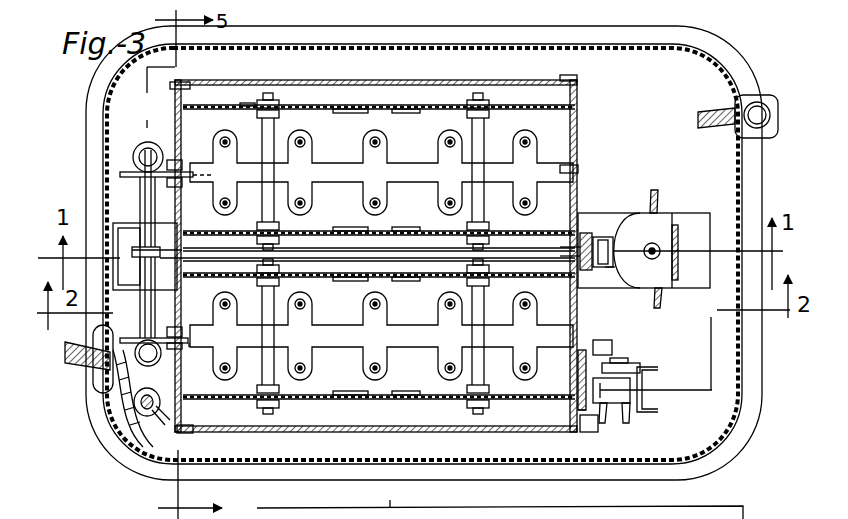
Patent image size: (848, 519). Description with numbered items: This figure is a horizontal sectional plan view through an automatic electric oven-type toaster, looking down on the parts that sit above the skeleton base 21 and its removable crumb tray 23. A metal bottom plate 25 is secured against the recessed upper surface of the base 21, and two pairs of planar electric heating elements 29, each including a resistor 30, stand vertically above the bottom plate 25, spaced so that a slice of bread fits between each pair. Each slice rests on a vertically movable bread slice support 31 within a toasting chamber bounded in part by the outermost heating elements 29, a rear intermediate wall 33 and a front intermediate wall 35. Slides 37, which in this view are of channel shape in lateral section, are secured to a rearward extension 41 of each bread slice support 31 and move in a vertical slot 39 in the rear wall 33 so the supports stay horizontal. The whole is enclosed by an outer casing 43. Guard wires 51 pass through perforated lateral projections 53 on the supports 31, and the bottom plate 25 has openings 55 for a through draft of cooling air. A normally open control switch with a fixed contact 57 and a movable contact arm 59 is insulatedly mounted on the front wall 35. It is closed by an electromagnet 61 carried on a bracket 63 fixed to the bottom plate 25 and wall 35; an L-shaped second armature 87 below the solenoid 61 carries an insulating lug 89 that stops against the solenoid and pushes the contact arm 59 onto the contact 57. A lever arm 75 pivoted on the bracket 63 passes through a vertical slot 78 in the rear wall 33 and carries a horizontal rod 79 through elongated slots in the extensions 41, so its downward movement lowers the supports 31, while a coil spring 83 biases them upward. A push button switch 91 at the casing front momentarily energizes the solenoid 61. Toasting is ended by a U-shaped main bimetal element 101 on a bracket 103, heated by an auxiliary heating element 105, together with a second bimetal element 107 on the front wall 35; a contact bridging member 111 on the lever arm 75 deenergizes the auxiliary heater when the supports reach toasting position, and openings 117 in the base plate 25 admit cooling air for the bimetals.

The base 21 is at (88, 117).
The crumb tray 23 is at (577, 118).
The bottom plate 25 is at (350, 450).
The electric heating elements 29 is at (402, 108).
The resistor 30 is at (512, 112).
The bread slice support 31 is at (343, 172).
The rear intermediate wall 33 is at (176, 105).
The front intermediate wall 35 is at (577, 136).
The slides 37 is at (184, 186).
The vertical slot 39 is at (178, 162).
The rearward extension 41 is at (129, 170).
The outer casing 43 is at (742, 373).
The guard wires 51 is at (296, 142).
The lateral projections 53 is at (375, 244).
The openings 55 is at (566, 200).
The fixed contact 57 is at (584, 240).
The movable contact arm 59 is at (600, 240).
The electromagnet 61 is at (665, 283).
The bracket 63 is at (678, 228).
The lever arm 75 is at (400, 255).
The vertical slot 78 is at (180, 250).
The horizontal rod 79 is at (143, 207).
The coil spring 83 is at (152, 270).
The second armature 87 is at (611, 262).
The lug 89 is at (616, 250).
The push button switch 91 is at (765, 107).
The main bimetal element 101 is at (627, 395).
The bracket 103 is at (652, 412).
The auxiliary electric heating element 105 is at (618, 375).
The second bimetal element 107 is at (585, 408).
The contact bridging member 111 is at (127, 232).
The openings 117 is at (612, 347).